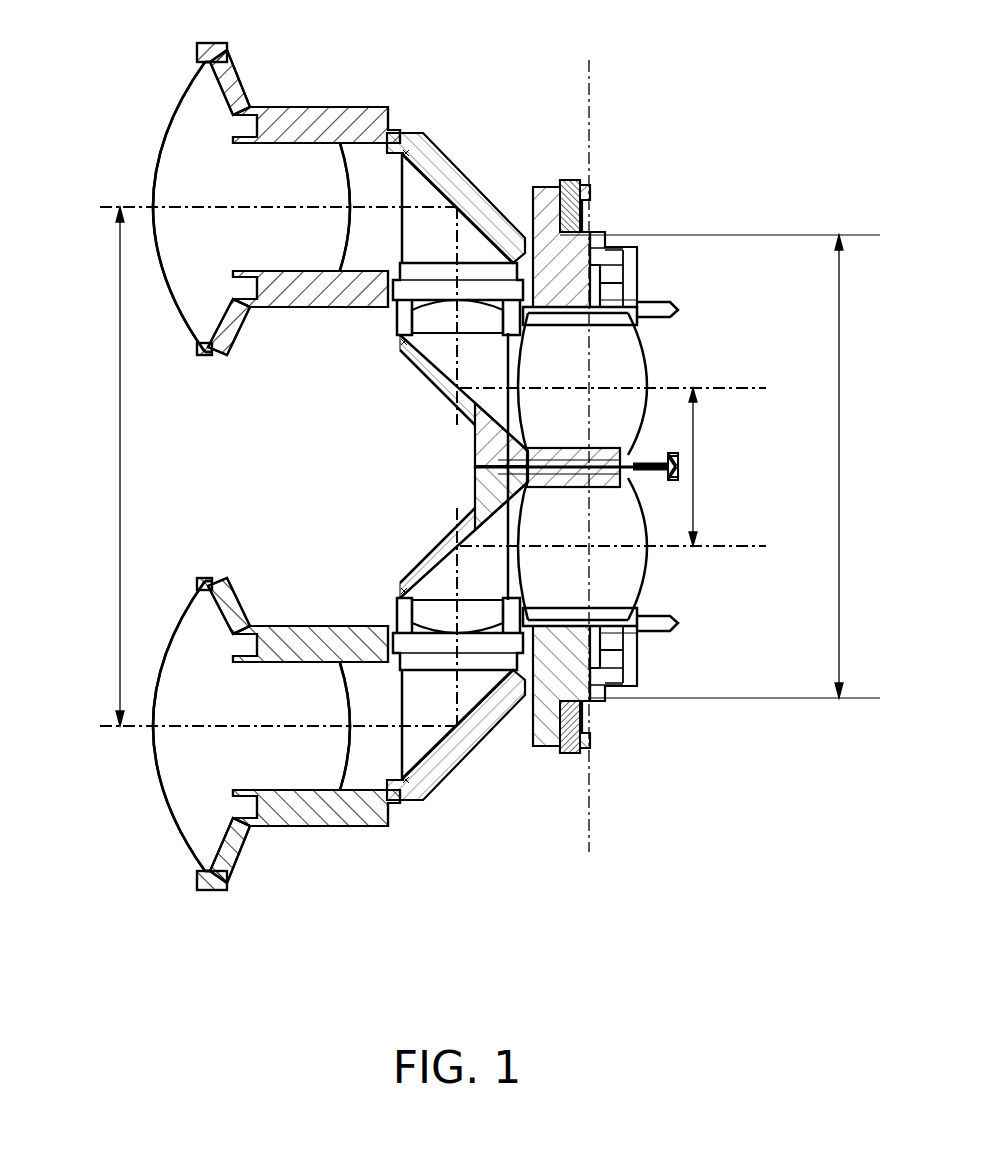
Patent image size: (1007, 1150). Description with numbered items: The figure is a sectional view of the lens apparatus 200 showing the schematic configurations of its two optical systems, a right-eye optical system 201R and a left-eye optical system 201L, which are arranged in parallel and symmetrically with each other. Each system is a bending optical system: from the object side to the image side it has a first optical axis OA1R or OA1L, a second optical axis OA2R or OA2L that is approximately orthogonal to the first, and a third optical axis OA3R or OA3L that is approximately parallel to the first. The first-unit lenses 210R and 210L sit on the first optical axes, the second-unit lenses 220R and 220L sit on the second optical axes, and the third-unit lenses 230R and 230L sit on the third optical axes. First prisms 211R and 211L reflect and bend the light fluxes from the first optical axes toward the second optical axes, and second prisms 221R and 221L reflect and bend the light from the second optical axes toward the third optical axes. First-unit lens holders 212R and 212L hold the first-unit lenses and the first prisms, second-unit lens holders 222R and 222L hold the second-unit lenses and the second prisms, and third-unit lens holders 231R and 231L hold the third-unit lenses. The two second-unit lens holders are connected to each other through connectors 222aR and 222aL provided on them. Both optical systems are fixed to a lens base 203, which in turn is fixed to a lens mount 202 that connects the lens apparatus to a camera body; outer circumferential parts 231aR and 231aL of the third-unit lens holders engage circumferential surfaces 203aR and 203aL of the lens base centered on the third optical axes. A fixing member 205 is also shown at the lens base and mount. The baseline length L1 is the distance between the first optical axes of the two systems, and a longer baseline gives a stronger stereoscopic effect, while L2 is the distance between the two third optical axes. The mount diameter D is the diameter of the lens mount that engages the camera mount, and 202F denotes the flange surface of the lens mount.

The lens apparatus 200 is at (783, 34).
The right-eye optical system 201R is at (180, 58).
The left-eye optical system 201L is at (165, 880).
The first-unit lens 210R is at (160, 170).
The first-unit lens 210L is at (157, 770).
The first-unit lens holder 212R is at (343, 106).
The first-unit lens holder 212L is at (280, 827).
The first prism 211R is at (420, 183).
The first prism 211L is at (407, 808).
The second-unit lens 220R is at (397, 302).
The second-unit lens 220L is at (498, 668).
The second prism 221R is at (455, 334).
The second prism 221L is at (512, 650).
The second-unit lens holder 222R is at (455, 385).
The second-unit lens holder 222L is at (443, 537).
The connector 222aR is at (473, 452).
The connector 222aL is at (473, 480).
The third-unit lens 230R is at (630, 314).
The third-unit lens 230L is at (568, 618).
The third-unit lens holder 231R is at (652, 456).
The third-unit lens holder 231L is at (645, 642).
The outer circumferential part 231aR is at (600, 353).
The outer circumferential part 231aL is at (638, 612).
The lens mount 202 is at (600, 236).
The flange surface 202F is at (598, 432).
The lens base 203 is at (546, 186).
The circumferential surface 203aR is at (630, 250).
The circumferential surface 203aL is at (640, 668).
The fixing screw 205 is at (568, 180).
The first optical axis OA1R is at (200, 212).
The first optical axis OA1L is at (201, 722).
The second optical axis OA2R is at (457, 228).
The second optical axis OA2L is at (457, 706).
The third optical axis OA3R is at (717, 384).
The third optical axis OA3L is at (717, 543).
The baseline length L1 is at (120, 362).
The distance between third optical axes L2 is at (697, 460).
The mount diameter D is at (838, 574).